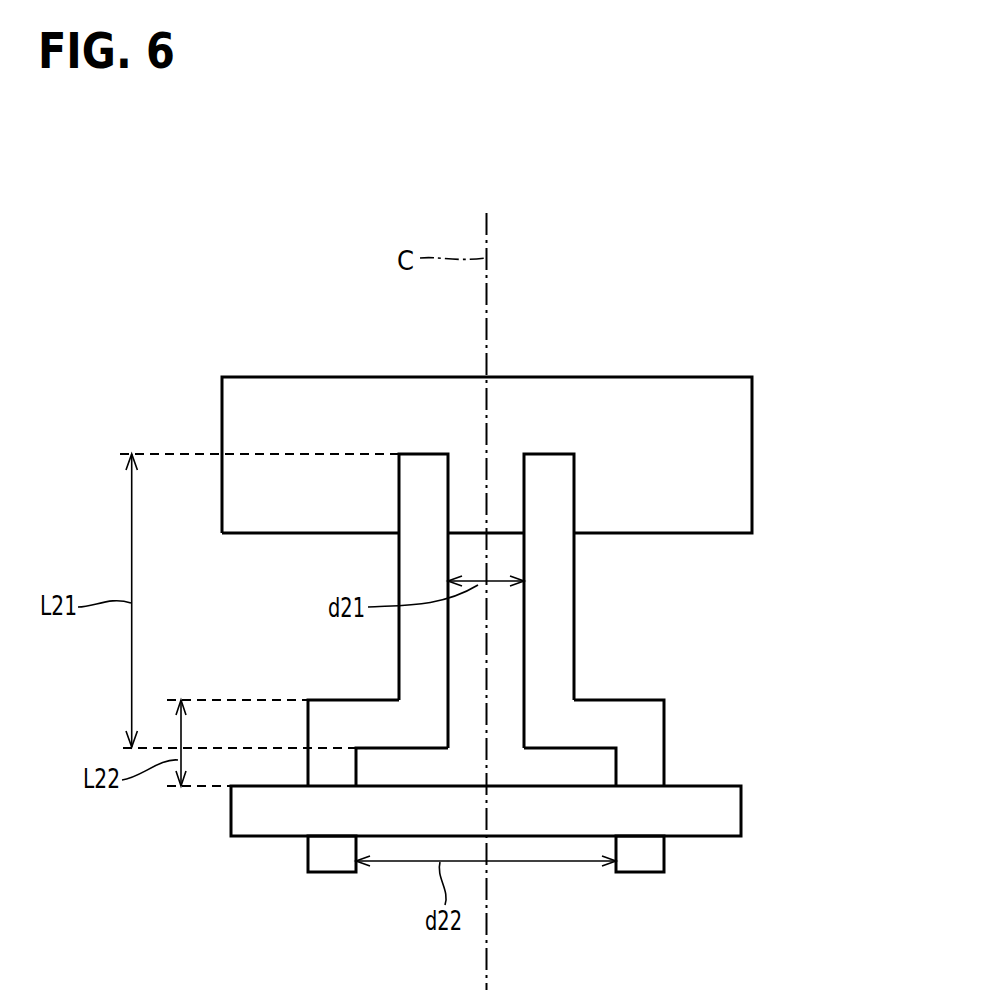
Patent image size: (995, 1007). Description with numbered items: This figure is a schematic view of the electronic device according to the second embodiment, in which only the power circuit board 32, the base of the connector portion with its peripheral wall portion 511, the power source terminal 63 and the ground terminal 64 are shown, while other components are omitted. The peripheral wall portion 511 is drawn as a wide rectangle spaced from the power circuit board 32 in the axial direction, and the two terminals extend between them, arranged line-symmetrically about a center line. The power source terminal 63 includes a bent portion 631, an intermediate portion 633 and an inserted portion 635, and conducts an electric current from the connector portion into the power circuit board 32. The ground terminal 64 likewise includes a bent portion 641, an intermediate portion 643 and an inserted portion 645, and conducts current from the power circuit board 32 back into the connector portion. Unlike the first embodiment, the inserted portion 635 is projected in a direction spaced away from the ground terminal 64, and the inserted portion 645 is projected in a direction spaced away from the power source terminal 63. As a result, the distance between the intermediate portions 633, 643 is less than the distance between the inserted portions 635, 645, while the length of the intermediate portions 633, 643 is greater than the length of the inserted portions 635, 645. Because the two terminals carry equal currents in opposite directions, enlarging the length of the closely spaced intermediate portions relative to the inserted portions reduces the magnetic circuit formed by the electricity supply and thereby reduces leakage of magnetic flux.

The peripheral wall portion 511 is at (222, 390).
The power circuit board 32 is at (730, 805).
The ground terminal 64 is at (334, 632).
The bent portion 641 is at (423, 454).
The intermediate portion 643 is at (410, 642).
The inserted portion 645 is at (316, 765).
The power source terminal 63 is at (637, 632).
The bent portion 631 is at (545, 454).
The intermediate portion 633 is at (565, 630).
The inserted portion 635 is at (653, 755).